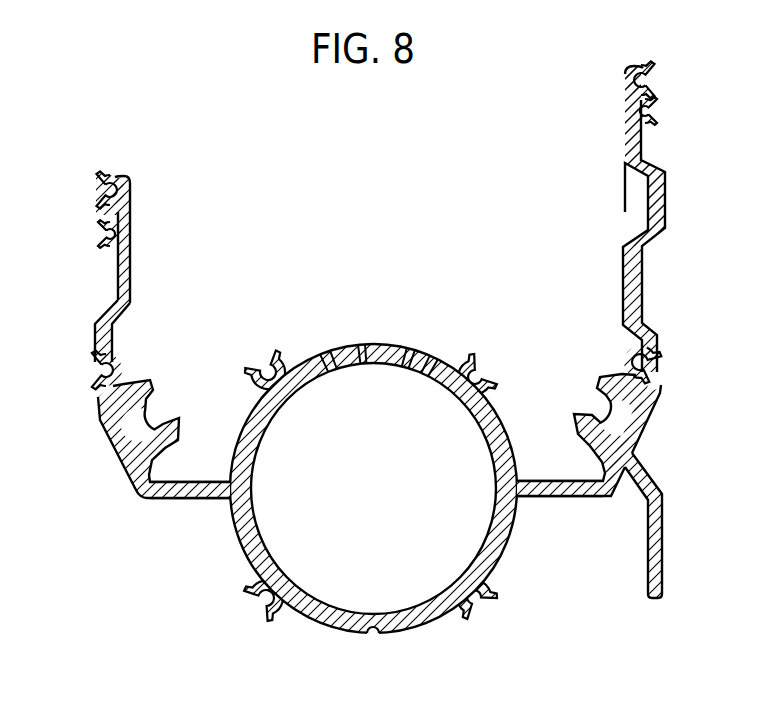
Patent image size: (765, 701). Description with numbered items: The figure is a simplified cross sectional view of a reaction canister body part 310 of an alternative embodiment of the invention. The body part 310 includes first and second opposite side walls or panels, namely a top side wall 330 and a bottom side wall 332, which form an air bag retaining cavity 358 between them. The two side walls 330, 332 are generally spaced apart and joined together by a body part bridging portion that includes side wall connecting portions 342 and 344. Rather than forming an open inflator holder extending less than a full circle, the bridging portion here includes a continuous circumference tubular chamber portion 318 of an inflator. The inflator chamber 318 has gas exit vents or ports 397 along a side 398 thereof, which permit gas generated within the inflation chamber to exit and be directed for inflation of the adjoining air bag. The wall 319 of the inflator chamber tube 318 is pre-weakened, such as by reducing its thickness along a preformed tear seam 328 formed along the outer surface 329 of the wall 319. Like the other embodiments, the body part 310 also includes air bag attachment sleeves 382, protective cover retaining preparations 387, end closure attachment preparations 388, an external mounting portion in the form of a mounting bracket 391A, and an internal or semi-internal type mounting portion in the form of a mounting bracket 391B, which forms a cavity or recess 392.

The reaction canister body part 310 is at (126, 575).
The continuous circumference tubular chamber portion of an inflator 318 is at (340, 632).
The wall 319 is at (253, 552).
The preformed tear seam 328 is at (372, 640).
The outer surface 329 is at (428, 630).
The top side wall 330 is at (128, 179).
The bottom side wall 332 is at (626, 117).
The side wall connecting portion 342 is at (190, 499).
The side wall connecting portion 344 is at (549, 497).
The air bag retaining cavity 358 is at (380, 216).
The air bag attachment sleeve 382 is at (147, 379).
The protective cover retaining preparation 387 is at (97, 233).
The end closure attachment preparation 388 is at (284, 354).
The mounting bracket 391A is at (661, 551).
The mounting bracket 391B is at (666, 175).
The cavity or recess 392 is at (620, 216).
The gas exit vents or ports 397 is at (437, 354).
The side 398 is at (380, 340).